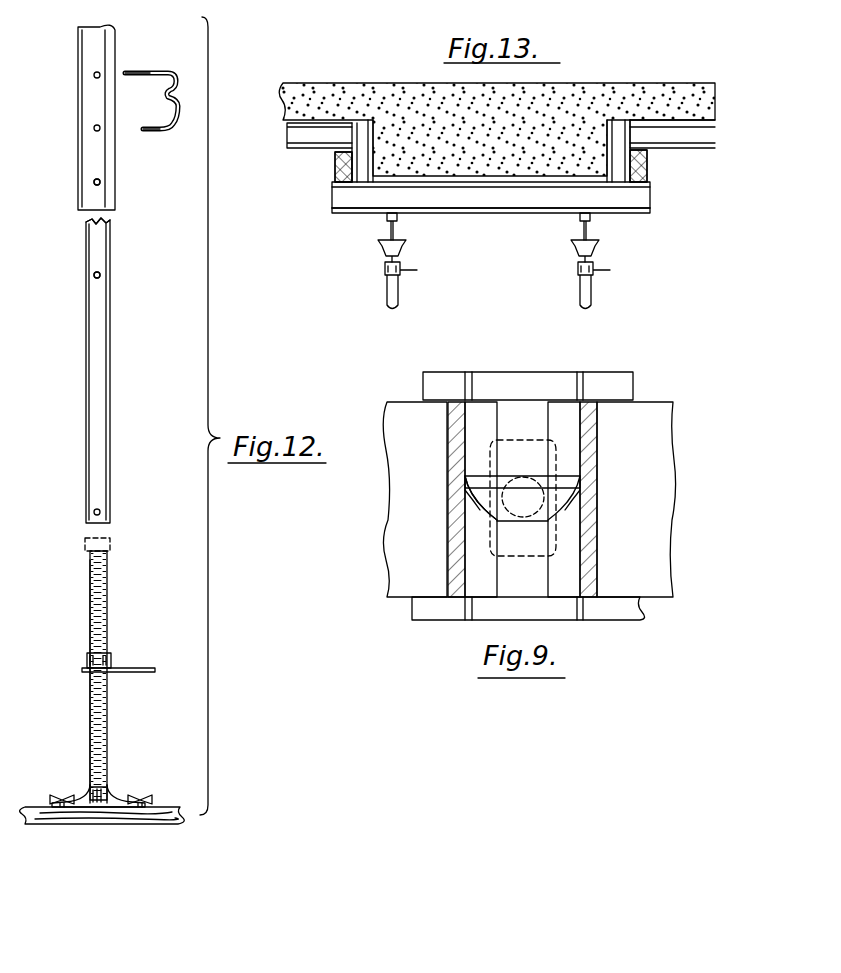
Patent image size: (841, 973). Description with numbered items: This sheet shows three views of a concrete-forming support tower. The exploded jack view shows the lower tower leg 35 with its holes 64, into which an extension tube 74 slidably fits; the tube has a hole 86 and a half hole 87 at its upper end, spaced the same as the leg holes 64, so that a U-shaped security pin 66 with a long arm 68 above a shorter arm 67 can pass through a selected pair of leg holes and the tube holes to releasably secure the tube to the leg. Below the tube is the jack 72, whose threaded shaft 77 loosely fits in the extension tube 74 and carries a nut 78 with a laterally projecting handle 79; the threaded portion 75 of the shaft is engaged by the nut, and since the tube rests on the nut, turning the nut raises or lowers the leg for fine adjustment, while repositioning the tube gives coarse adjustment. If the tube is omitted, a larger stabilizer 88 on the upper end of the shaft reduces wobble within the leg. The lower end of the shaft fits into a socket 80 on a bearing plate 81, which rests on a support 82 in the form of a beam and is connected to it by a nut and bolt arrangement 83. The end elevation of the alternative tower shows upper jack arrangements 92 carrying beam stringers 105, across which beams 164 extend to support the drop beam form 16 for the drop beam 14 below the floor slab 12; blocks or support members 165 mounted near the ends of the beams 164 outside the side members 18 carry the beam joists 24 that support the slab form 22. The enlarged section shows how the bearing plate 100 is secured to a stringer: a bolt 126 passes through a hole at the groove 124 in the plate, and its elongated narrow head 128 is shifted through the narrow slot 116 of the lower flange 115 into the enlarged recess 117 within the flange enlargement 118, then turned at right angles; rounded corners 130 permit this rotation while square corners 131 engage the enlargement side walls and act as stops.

In FIG. 12, the lower tower leg 35 is at (82, 107).
In FIG. 13, the lower tower leg 35 is at (386, 292).
In FIG. 12, the holes 64 is at (100, 182).
In FIG. 12, the U-shaped connector pin 66 is at (196, 55).
In FIG. 12, the long arm 68 is at (150, 72).
In FIG. 12, the short arm 67 is at (154, 132).
In FIG. 12, the extension tube 74 is at (103, 371).
In FIG. 12, the half hole 87 is at (96, 228).
In FIG. 12, the hole 86 is at (101, 277).
In FIG. 12, the jack 72 is at (107, 687).
In FIG. 12, the stabilizer 88 is at (114, 532).
In FIG. 12, the threaded rod 75 is at (108, 616).
In FIG. 12, the threaded jack shaft 77 is at (90, 611).
In FIG. 12, the nut 78 is at (87, 660).
In FIG. 12, the handle 79 is at (132, 668).
In FIG. 12, the socket 80 is at (94, 808).
In FIG. 12, the bearing plate 81 is at (124, 809).
In FIG. 12, the nut and bolt arrangement 83 is at (62, 794).
In FIG. 12, the support 82 is at (158, 826).
In FIG. 13, the floor slab 12 is at (615, 92).
In FIG. 13, the slab form 22 is at (652, 120).
In FIG. 13, the beam joists 24 is at (690, 147).
In FIG. 13, the drop beam form 16 is at (366, 132).
In FIG. 13, the side members 18 is at (612, 170).
In FIG. 13, the support members 165 is at (336, 170).
In FIG. 13, the drop beam 14 is at (520, 168).
In FIG. 13, the beams 164 is at (486, 200).
In FIG. 13, the beam stringer 105 is at (390, 225).
In FIG. 13, the upper jack arrangements 92 is at (408, 250).
In FIG. 9, the bearing plate 100 is at (633, 378).
In FIG. 9, the enlarged recess 117 is at (565, 400).
In FIG. 9, the narrow slot 116 is at (580, 603).
In FIG. 9, the groove 124 is at (492, 616).
In FIG. 9, the lower flange 115 is at (665, 412).
In FIG. 9, the flange enlargement 118 is at (590, 424).
In FIG. 9, the bolts 126 is at (582, 490).
In FIG. 9, the rounded corners 130 is at (490, 500).
In FIG. 9, the bolt head 128 is at (490, 520).
In FIG. 9, the square corners 131 is at (466, 478).